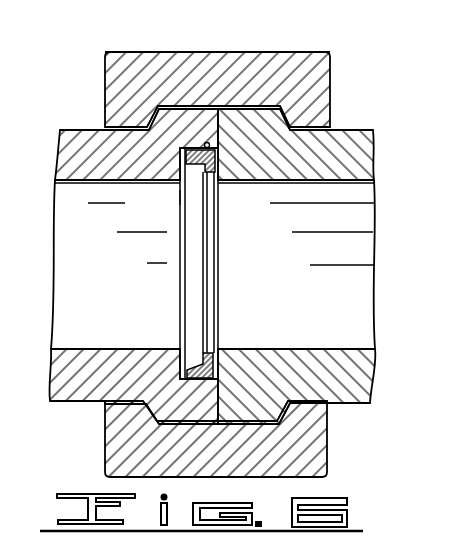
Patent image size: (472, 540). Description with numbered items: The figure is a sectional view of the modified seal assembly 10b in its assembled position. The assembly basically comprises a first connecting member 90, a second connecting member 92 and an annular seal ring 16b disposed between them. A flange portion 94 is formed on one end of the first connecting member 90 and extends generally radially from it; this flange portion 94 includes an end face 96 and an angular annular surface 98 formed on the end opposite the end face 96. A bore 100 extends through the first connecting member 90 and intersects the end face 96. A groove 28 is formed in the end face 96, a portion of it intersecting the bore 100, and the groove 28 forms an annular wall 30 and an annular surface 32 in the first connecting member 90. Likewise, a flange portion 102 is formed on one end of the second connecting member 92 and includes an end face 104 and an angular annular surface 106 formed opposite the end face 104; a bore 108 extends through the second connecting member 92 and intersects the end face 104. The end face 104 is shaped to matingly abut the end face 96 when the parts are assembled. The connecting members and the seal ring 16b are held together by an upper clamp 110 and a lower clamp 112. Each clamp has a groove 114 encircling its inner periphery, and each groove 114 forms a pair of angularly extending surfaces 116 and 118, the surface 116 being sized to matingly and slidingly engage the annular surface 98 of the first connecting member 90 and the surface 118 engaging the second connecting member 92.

The modified seal assembly 10b is at (217, 34).
The upper clamp 110 is at (253, 63).
The lower clamp 112 is at (318, 460).
The first connecting member 90 is at (76, 130).
The second connecting member 92 is at (346, 135).
The bore 100 is at (125, 348).
The bore 108 is at (268, 350).
The annular seal ring 16b is at (204, 175).
The groove 28 is at (185, 158).
The annular wall 30 is at (183, 198).
The annular surface 32 is at (206, 143).
The angular annular surface 98 is at (155, 118).
The groove 114 is at (216, 106).
The angularly extending surface 116 is at (145, 130).
The angularly extending surface 118 is at (283, 124).
The end face 104 is at (219, 114).
The angular annular surface 106 is at (292, 112).
The flange portion 94 is at (174, 423).
The end face 96 is at (217, 414).
The flange portion 102 is at (268, 428).